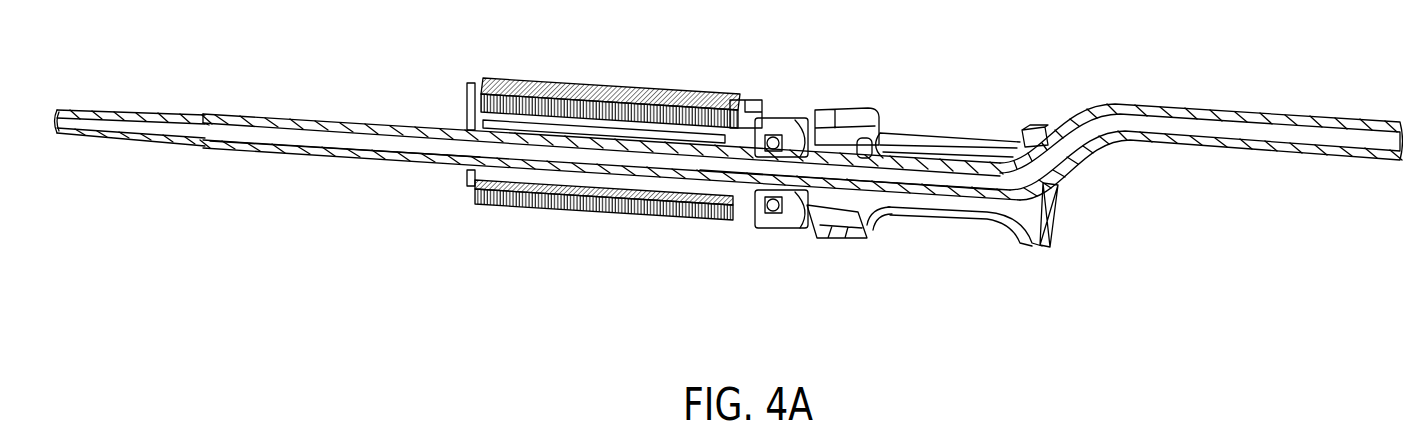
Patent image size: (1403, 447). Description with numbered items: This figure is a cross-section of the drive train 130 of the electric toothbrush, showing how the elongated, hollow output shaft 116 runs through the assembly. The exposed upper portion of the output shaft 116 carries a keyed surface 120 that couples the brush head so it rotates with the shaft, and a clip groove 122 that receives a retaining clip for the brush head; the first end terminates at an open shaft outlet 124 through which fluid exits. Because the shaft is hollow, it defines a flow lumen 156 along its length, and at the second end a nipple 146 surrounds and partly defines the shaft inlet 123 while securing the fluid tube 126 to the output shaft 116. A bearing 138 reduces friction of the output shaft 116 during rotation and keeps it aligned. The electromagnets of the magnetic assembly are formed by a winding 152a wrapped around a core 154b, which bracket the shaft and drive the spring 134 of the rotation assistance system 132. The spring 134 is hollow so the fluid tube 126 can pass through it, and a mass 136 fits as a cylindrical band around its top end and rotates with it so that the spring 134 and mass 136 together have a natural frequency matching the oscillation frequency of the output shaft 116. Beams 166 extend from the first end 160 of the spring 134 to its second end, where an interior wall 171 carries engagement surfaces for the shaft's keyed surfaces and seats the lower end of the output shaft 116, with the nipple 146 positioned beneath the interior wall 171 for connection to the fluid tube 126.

The output shaft 116 is at (245, 120).
The keyed surface 120 is at (93, 138).
The clip groove 122 is at (208, 114).
The shaft inlet 123 is at (898, 182).
The shaft outlet 124 is at (50, 121).
The fluid tube 126 is at (1182, 110).
The drive train 130 is at (925, 151).
The rotation assistance system 132 is at (940, 108).
The spring 134 is at (952, 140).
The mass 136 is at (840, 109).
The bearing 138 is at (770, 218).
The nipple 146 is at (891, 197).
The winding 152a is at (745, 99).
The core 154b is at (555, 86).
The flow lumen 156 is at (296, 146).
The first end 160 is at (1052, 234).
The beams 166 is at (987, 219).
The interior wall 171 is at (858, 209).